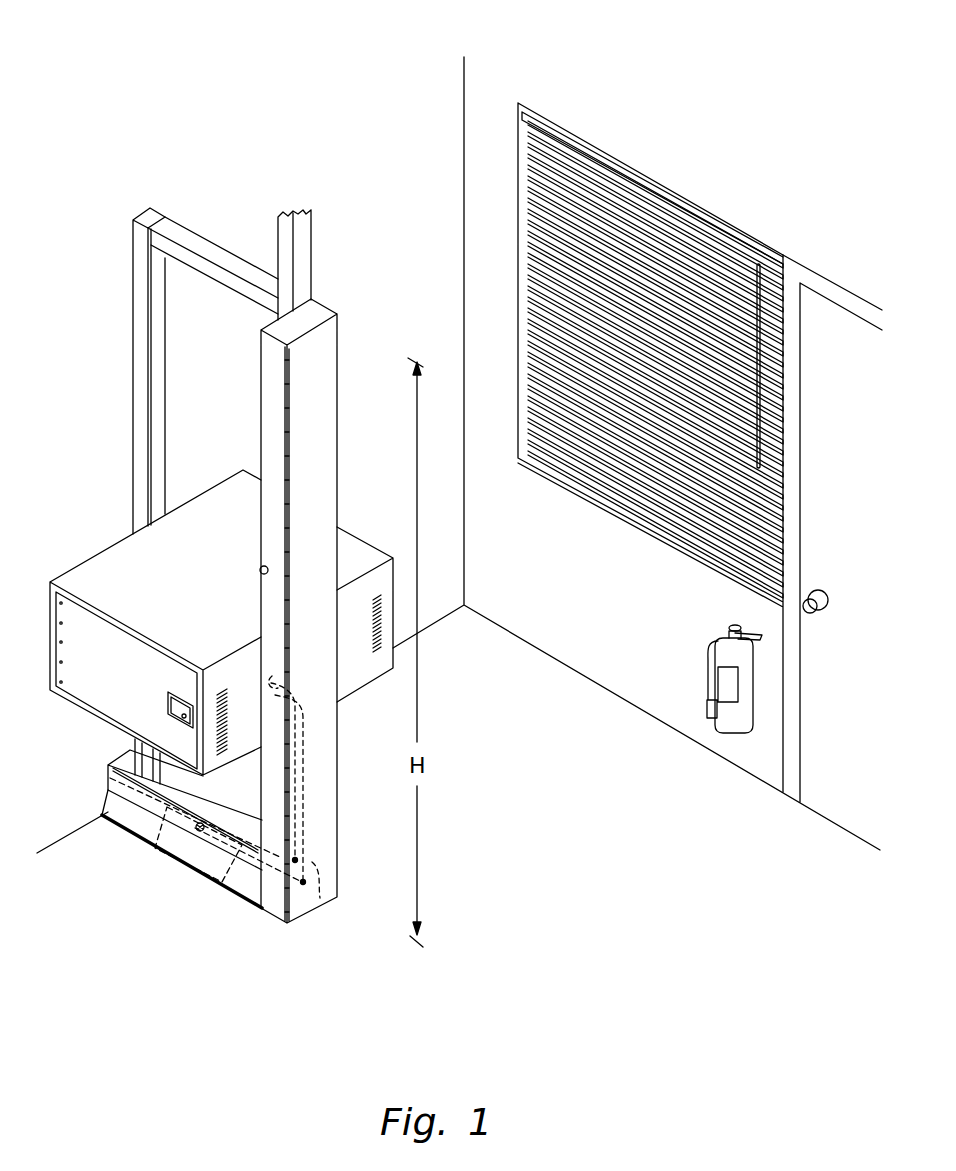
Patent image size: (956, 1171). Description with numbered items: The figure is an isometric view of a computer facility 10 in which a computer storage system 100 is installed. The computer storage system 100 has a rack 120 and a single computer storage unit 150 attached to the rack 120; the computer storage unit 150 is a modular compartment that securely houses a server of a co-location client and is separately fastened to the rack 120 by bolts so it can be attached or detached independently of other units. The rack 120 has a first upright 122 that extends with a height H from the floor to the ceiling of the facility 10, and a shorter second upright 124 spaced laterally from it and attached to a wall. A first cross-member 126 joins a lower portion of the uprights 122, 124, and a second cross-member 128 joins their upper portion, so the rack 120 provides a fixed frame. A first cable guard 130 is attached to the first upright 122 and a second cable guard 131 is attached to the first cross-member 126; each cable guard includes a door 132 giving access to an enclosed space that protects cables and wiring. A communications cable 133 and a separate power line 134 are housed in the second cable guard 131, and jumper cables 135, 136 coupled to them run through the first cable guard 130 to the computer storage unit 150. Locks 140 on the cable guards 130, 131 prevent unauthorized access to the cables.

The computer facility 10 is at (300, 112).
The computer storage system 100 is at (122, 524).
The rack 120 is at (320, 300).
The first upright 122 is at (300, 250).
The second upright 124 is at (137, 285).
The first cross-member 126 is at (243, 888).
The second cross-member 128 is at (200, 265).
The first cable guard 130 is at (323, 562).
The second cable guard 131 is at (108, 782).
The door 132 is at (278, 512).
The communications cable 133 is at (148, 847).
The power line 134 is at (215, 878).
The jumper cable 135 is at (308, 766).
The jumper cable 136 is at (303, 805).
The lock 140 is at (256, 575).
The computer storage unit 150 is at (203, 575).